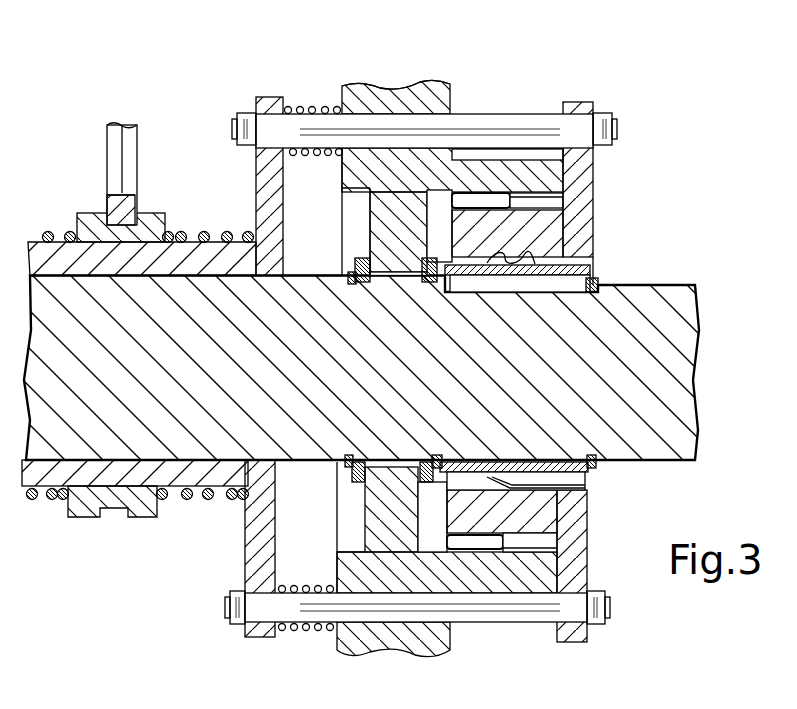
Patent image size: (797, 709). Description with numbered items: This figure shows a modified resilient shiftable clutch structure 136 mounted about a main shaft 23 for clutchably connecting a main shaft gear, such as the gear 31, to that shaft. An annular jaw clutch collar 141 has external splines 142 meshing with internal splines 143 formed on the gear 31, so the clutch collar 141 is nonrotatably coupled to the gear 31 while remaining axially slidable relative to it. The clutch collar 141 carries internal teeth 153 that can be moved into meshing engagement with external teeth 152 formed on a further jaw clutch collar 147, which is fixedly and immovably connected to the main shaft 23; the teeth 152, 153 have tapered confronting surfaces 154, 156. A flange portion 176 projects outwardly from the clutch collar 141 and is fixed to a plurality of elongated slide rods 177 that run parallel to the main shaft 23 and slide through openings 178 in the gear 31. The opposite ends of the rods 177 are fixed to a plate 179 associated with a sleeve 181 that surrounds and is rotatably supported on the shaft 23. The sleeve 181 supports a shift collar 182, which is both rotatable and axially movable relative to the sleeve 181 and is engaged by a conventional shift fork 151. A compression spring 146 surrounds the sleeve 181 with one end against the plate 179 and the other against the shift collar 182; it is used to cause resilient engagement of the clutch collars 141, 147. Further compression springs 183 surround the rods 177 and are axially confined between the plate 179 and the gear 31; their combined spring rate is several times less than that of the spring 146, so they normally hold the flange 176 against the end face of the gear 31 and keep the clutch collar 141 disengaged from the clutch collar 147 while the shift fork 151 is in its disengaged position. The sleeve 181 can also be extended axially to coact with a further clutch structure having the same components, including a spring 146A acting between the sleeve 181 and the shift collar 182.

The main shaft 23 is at (683, 370).
The gear 31 is at (433, 88).
The resilient shiftable clutch structure 136 is at (648, 107).
The annular jaw clutch collar 141 is at (577, 231).
The external splines 142 is at (483, 204).
The internal splines 143 is at (553, 202).
The compression spring 146 is at (227, 233).
The spring 146A is at (50, 233).
The further jaw clutch collar 147 is at (543, 282).
The shift fork 151 is at (113, 137).
The external teeth 152 is at (577, 262).
The internal teeth 153 is at (448, 278).
The tapered confronting surface 154 is at (475, 278).
The tapered confronting surface 156 is at (528, 245).
The flange portion 176 is at (578, 103).
The slide rods 177 is at (460, 130).
The openings 178 is at (396, 110).
The plate 179 is at (257, 540).
The sleeve 181 is at (195, 472).
The shift collar 182 is at (87, 503).
The compression springs 183 is at (303, 107).